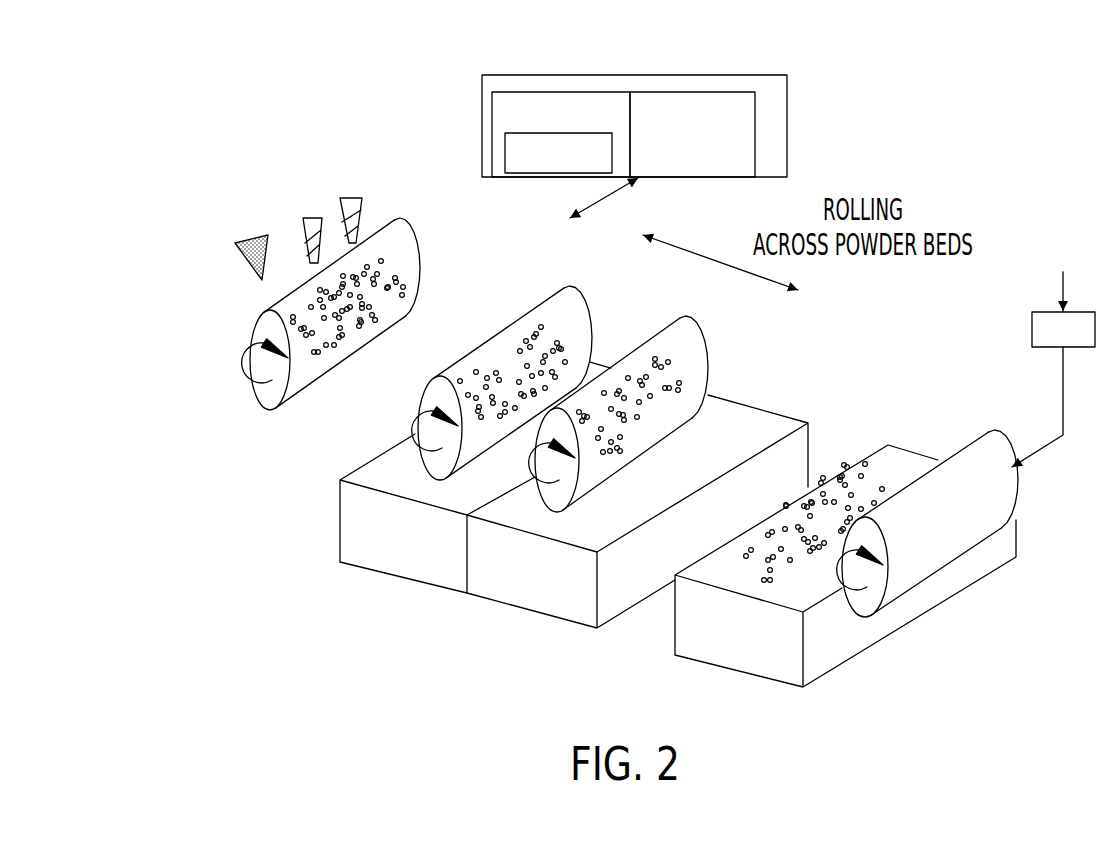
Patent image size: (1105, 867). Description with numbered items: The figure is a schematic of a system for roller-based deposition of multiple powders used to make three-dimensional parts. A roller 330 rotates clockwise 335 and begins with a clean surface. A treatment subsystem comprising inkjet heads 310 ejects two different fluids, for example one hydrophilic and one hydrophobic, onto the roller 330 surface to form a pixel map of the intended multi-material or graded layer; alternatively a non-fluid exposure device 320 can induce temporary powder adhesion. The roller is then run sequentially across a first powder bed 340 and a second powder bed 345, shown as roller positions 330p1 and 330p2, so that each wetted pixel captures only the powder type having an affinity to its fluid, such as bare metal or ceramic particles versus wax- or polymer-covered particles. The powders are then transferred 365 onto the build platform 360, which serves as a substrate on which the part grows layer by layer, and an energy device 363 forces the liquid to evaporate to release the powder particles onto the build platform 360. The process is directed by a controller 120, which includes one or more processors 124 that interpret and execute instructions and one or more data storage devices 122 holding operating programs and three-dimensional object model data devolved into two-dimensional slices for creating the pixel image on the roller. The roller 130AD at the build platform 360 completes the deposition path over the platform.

The controller 120 is at (788, 83).
The data storage device 122 is at (507, 118).
The processor 124 is at (743, 138).
The inkjet heads 310 is at (242, 152).
The exposure device 320 is at (240, 242).
The roller 330 is at (268, 327).
The clockwise rotation 335 is at (268, 372).
The roller position over first powder bed 330p1 is at (545, 305).
The roller position over second powder bed 330p2 is at (660, 336).
The powder bed 340 is at (410, 566).
The powder bed 345 is at (497, 595).
The build platform 360 is at (703, 652).
The energy device 363 is at (1032, 332).
The powder transfer 365 is at (870, 463).
The additive deposition roller 130AD is at (987, 440).